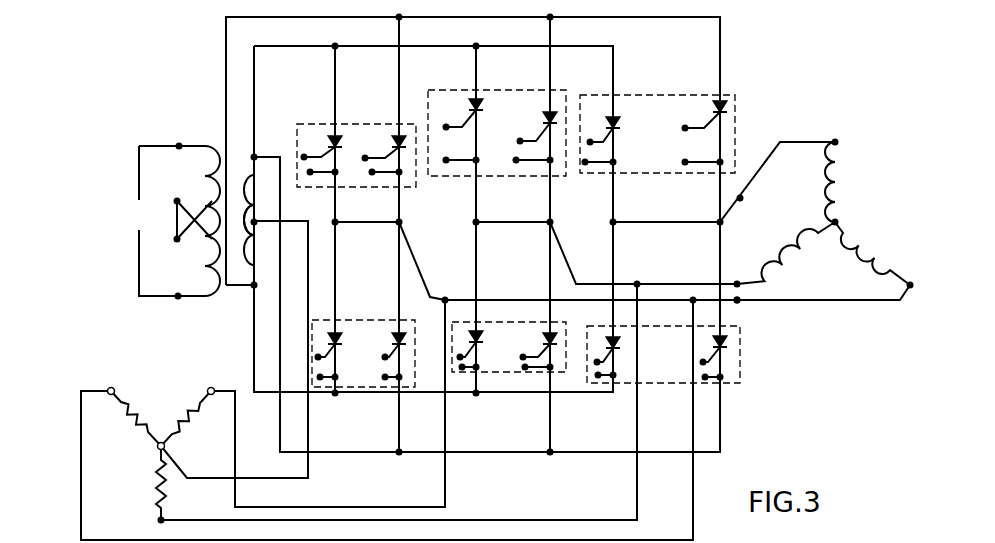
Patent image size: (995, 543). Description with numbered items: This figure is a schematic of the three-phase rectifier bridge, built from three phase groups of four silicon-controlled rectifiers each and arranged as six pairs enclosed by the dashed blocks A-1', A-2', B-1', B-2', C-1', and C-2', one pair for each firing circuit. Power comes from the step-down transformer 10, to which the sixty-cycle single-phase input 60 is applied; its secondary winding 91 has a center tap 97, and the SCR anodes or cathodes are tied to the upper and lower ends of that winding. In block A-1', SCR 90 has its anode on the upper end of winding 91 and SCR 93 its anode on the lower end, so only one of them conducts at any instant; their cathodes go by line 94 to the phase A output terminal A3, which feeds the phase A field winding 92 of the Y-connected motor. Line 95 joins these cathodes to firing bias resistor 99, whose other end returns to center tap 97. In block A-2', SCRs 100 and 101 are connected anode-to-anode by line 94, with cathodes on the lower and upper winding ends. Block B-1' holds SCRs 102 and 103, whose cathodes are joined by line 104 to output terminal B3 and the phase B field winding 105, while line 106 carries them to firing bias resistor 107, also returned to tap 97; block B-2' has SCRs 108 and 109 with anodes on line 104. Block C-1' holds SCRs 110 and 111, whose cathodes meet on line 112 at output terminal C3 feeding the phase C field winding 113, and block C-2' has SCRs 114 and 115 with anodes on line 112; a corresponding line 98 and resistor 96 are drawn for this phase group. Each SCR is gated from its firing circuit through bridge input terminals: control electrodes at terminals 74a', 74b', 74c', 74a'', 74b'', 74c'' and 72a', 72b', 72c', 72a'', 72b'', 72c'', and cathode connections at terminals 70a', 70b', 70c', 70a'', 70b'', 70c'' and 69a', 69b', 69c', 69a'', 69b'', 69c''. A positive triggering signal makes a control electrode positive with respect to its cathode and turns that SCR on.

The transformer 10 is at (208, 298).
The control winding 60 is at (141, 222).
The secondary winding 91 is at (255, 196).
The center tap 97 is at (256, 219).
The dashed line block A-1' is at (355, 143).
The dashed line block B-1' is at (487, 123).
The dashed line block C-1' is at (673, 123).
The dashed line block A-2' is at (363, 342).
The dashed line block B-2' is at (509, 337).
The dashed line block C-2' is at (682, 354).
The first SCR 90 is at (336, 146).
The second SCR 93 is at (394, 145).
The SCR 102 is at (480, 110).
The SCR 103 is at (548, 116).
The SCR 110 is at (619, 120).
The SCR 111 is at (728, 110).
The SCR 100 is at (337, 346).
The SCR 101 is at (393, 339).
The SCR 108 is at (478, 341).
The SCR 109 is at (546, 340).
The SCR 114 is at (613, 348).
The SCR 115 is at (724, 346).
The input terminal 74a' is at (307, 147).
The input terminal 74b' is at (455, 114).
The input terminal 74c' is at (601, 124).
The input terminal 74a'' is at (309, 352).
The input terminal 74b'' is at (447, 352).
The input terminal 74c'' is at (589, 353).
The input terminal 72a' is at (370, 164).
The input terminal 72b' is at (520, 133).
The input terminal 72c' is at (689, 116).
The input terminal 72a'' is at (375, 362).
The input terminal 72b'' is at (517, 355).
The input terminal 72c'' is at (687, 356).
The input terminal 70a' is at (316, 187).
The input terminal 70b' is at (457, 150).
The input terminal 70c' is at (589, 179).
The input terminal 70a'' is at (338, 395).
The input terminal 70b'' is at (463, 379).
The input terminal 70c'' is at (588, 383).
The input terminal 69a' is at (386, 187).
The input terminal 69b' is at (518, 153).
The input terminal 69c' is at (686, 154).
The input terminal 69a'' is at (384, 395).
The input terminal 69b'' is at (520, 379).
The input terminal 69c'' is at (738, 375).
The line 94 is at (374, 228).
The line 104 is at (527, 221).
The line 112 is at (665, 221).
The line 95 is at (446, 418).
The line 106 is at (633, 478).
The conductor 98 is at (692, 500).
The firing bias resistor 99 is at (135, 431).
The resistor 96 is at (190, 419).
The firing bias resistor 107 is at (158, 487).
The phase C field winding 113 is at (837, 172).
The phase B field winding 105 is at (799, 240).
The phase A field winding 92 is at (862, 258).
The phase A output terminal A3 is at (744, 297).
The phase B output terminal B3 is at (747, 279).
The phase C output terminal C3 is at (744, 198).